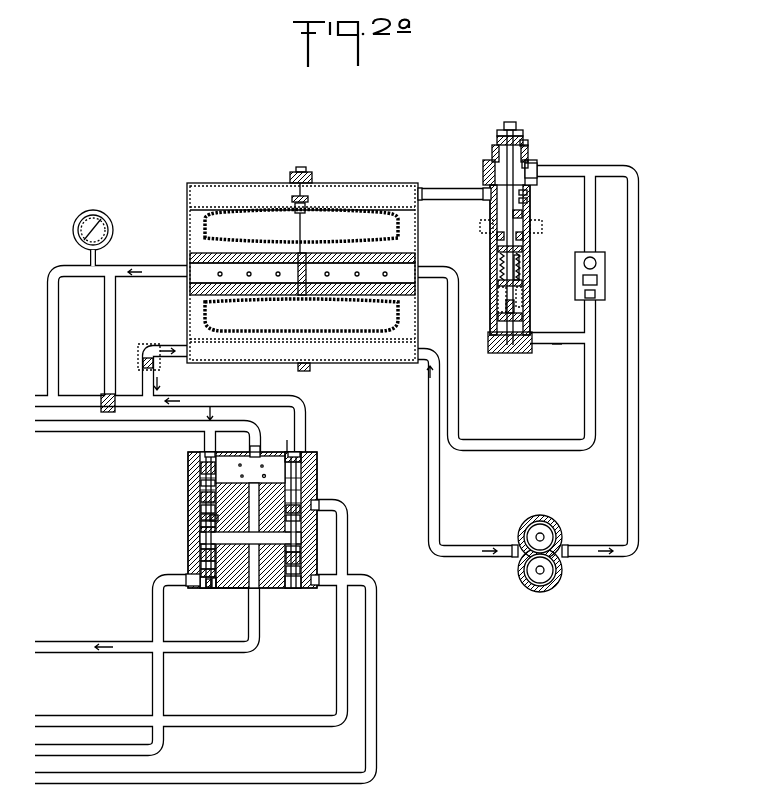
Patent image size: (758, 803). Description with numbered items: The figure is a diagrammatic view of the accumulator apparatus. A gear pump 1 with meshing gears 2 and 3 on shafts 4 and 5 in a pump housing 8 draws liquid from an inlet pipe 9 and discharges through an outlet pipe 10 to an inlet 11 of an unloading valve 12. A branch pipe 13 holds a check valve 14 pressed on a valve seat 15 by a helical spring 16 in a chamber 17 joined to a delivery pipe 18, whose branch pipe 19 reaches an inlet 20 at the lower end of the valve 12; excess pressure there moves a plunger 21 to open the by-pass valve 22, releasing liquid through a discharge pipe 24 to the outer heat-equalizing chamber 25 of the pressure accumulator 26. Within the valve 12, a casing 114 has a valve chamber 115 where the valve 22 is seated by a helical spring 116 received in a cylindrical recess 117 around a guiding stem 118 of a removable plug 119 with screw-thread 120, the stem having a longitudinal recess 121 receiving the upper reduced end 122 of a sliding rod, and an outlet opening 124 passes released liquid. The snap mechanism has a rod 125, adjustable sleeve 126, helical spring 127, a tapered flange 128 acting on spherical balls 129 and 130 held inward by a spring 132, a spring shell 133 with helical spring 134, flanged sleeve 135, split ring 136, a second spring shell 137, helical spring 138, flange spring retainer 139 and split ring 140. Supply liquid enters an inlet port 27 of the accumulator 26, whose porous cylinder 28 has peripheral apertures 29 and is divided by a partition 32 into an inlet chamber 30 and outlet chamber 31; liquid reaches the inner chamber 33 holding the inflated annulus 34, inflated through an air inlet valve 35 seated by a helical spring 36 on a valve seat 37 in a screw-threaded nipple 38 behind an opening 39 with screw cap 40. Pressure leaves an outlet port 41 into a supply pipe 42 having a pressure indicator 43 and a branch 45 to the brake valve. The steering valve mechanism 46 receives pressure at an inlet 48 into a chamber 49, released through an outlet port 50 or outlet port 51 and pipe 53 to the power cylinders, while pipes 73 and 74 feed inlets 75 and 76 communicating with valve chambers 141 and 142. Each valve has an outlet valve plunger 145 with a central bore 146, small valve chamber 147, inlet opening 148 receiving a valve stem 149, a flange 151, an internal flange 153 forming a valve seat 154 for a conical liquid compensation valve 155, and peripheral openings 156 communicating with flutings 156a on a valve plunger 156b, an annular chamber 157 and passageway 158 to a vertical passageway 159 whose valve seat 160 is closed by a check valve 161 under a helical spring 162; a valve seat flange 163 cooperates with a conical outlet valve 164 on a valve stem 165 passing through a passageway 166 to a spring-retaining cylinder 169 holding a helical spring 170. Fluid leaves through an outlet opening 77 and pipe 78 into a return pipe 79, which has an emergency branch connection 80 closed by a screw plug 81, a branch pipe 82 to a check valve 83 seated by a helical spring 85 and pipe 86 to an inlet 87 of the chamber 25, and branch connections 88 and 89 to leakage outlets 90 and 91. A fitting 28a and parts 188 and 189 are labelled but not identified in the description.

The gear pump 1 is at (549, 507).
The gear 2 is at (553, 527).
The gear 3 is at (540, 593).
The shaft 4 is at (545, 535).
The shaft 5 is at (546, 570).
The pump housing 8 is at (528, 520).
The inlet pipe 9 is at (474, 551).
The outlet pipe 10 is at (601, 549).
The inlet 11 is at (538, 170).
The unloading valve 12 is at (553, 114).
The branch pipe 13 is at (596, 205).
The check valve 14 is at (598, 263).
The valve seat 15 is at (593, 258).
The helical spring 16 is at (598, 280).
The chamber 17 is at (598, 292).
The main supply pipe 18 is at (596, 325).
The branch pipe 19 is at (558, 344).
The inlet 20 is at (536, 336).
The plunger 21 is at (510, 353).
The by-pass valve 22 is at (483, 172).
The discharge pipe 24 is at (436, 190).
The outer annular heat-equalizing chamber 25 is at (385, 190).
The pressure accumulator 26 is at (428, 200).
The inlet port 27 is at (425, 275).
The cylinder of porous material 28 is at (205, 312).
The lower fitting 28a is at (312, 370).
The peripheral apertures 29 is at (217, 274).
The inlet chamber 30 is at (420, 256).
The outlet chamber 31 is at (190, 256).
The partition 32 is at (325, 273).
The inner chamber 33 is at (195, 208).
The inflated annulus 34 is at (205, 222).
The air inlet valve 35 is at (308, 196).
The helical spring 36 is at (310, 203).
The valve seat 37 is at (292, 198).
The screw-threaded nipple 38 is at (308, 195).
The opening 39 is at (308, 172).
The screw cap 40 is at (298, 169).
The outlet port 41 is at (190, 289).
The supply pipe 42 is at (128, 265).
The pressure indicator 43 is at (93, 210).
The branch 45 is at (95, 432).
The power steering valve mechanism 46 is at (176, 457).
The inlet 48 is at (256, 445).
The chamber 49 is at (268, 458).
The outlet port 50 is at (200, 508).
The outlet port 51 is at (320, 505).
The pipe 53 is at (85, 716).
The pipe 73 is at (84, 748).
The pipe 74 is at (84, 779).
The inlet 75 is at (200, 570).
The inlet 76 is at (324, 588).
The outlet opening 77 is at (261, 630).
The pipe 78 is at (85, 643).
The return pipe 79 is at (90, 396).
The emergency branch connection 80 is at (105, 308).
The screw plug 81 is at (100, 405).
The branch pipe 82 is at (142, 384).
The check valve 83 is at (155, 364).
The helical spring 85 is at (151, 344).
The pipe 86 is at (178, 345).
The inlet 87 is at (193, 356).
The branch connection 88 is at (210, 425).
The branch connection 89 is at (301, 430).
The outlet 90 is at (207, 452).
The outlet 91 is at (303, 455).
The casing 114 is at (521, 274).
The valve chamber 115 is at (483, 181).
The helical spring 116 is at (528, 150).
The cylindrical recess 117 is at (529, 160).
The guiding stem 118 is at (522, 131).
The removable plug 119 is at (516, 122).
The screw-thread 120 is at (507, 122).
The longitudinal recess 121 is at (528, 140).
The upper reduced end 122 is at (497, 148).
The outlet opening 124 is at (483, 194).
The rod 125 is at (497, 293).
The adjustable sleeve 126 is at (497, 320).
The helical spring 127 is at (505, 306).
The tapered flange 128 is at (497, 238).
The spherical ball 129 is at (487, 220).
The spherical ball 130 is at (524, 237).
The spring 132 is at (542, 226).
The spring shell 133 is at (524, 217).
The helical spring 134 is at (497, 250).
The flanged sleeve 135 is at (527, 195).
The split ring 136 is at (527, 204).
The spring shell 137 is at (499, 262).
The helical spring 138 is at (497, 278).
The flange spring retainer 139 is at (520, 262).
The split ring 140 is at (522, 288).
The valve chamber 141 is at (208, 592).
The valve chamber 142 is at (288, 592).
The outlet valve plunger 145 is at (200, 556).
The central bore 146 is at (284, 550).
The small valve chamber 147 is at (284, 572).
The inlet opening 148 is at (214, 590).
The valve stem 149 is at (203, 590).
The flange 151 is at (226, 590).
The internal flange 153 is at (216, 572).
The valve seat 154 is at (192, 586).
The liquid compensation valve 155 is at (284, 560).
The peripheral openings 156 is at (200, 537).
The flutings 156a is at (284, 510).
The valve plunger 156b is at (284, 520).
The annular chamber 157 is at (200, 546).
The passageway 158 is at (216, 508).
The vertical passageway 159 is at (216, 522).
The valve seat 160 is at (318, 480).
The liquid compensating conical check valve 161 is at (259, 476).
The helical spring 162 is at (248, 482).
The valve seat flange 163 is at (200, 530).
The conical outlet valve 164 is at (200, 523).
The valve stem 165 is at (200, 516).
The passageway 166 is at (200, 495).
The spring-retaining cylinder 169 is at (218, 458).
The helical inlet valve-seating spring 170 is at (246, 468).
The seal 188 is at (200, 482).
The outlet bend 189 is at (318, 512).